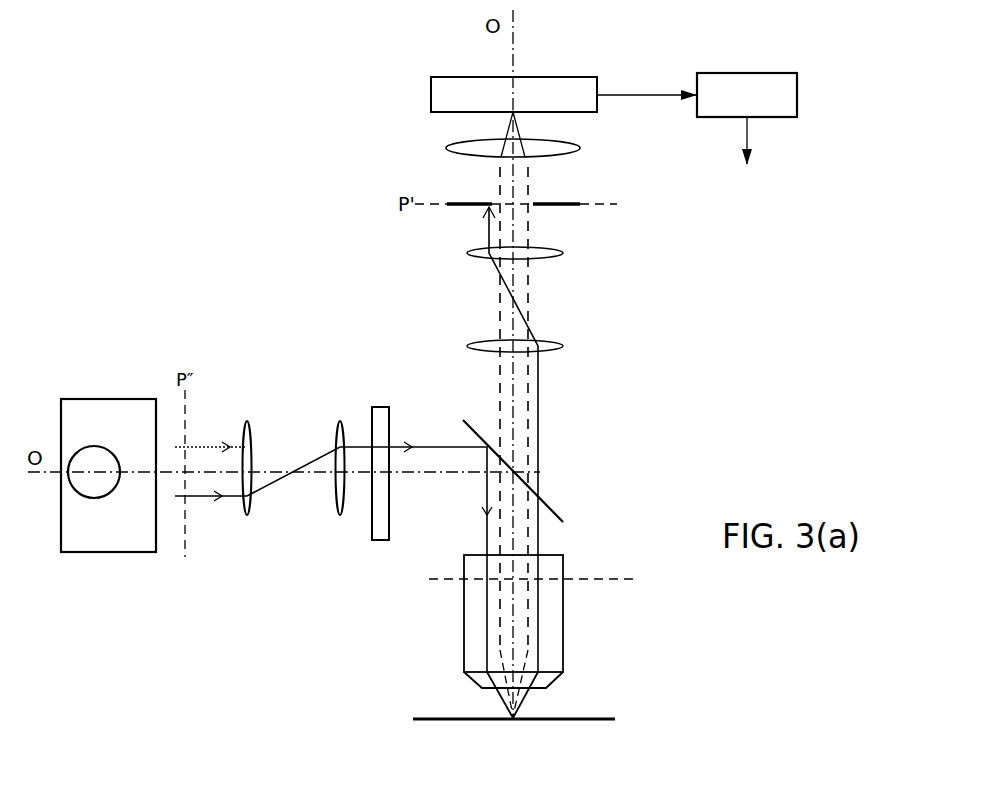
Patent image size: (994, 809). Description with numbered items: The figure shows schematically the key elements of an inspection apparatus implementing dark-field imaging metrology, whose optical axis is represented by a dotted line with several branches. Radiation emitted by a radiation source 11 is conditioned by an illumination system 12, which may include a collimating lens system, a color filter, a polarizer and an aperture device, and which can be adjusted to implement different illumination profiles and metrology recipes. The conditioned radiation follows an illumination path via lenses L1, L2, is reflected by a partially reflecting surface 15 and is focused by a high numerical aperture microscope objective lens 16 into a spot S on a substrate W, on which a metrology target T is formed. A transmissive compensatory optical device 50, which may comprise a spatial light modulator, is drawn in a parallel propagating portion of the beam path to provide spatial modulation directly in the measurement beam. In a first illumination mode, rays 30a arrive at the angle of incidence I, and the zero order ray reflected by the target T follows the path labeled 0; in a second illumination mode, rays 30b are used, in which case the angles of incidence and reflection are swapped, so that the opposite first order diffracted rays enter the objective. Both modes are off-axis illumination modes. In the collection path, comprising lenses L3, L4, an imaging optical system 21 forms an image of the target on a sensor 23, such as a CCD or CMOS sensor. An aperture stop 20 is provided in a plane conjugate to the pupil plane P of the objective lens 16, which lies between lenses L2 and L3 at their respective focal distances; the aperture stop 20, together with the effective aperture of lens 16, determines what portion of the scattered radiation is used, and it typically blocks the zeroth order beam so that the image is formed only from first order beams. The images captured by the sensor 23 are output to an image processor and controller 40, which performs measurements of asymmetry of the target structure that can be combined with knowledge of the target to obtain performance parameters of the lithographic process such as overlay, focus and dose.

The radiation source 11 is at (94, 472).
The illumination system 12 is at (108, 457).
The partially reflecting surface 15 is at (553, 502).
The microscope objective lens 16 is at (565, 630).
The aperture stop 20 is at (568, 206).
The imaging optical system 21 is at (570, 155).
The sensor 23 is at (588, 77).
The rays of first illumination mode 30a is at (452, 443).
The rays of second illumination mode 30b is at (203, 447).
The image processor and controller 40 is at (700, 149).
The compensatory optical device 50 is at (378, 541).
The zero order ray path 0 is at (540, 600).
The angle of incidence I is at (485, 638).
The spot S is at (503, 698).
The substrate W is at (422, 723).
The target T is at (542, 709).
The pupil plane P is at (542, 579).
The lens L1 is at (246, 482).
The lens L2 is at (339, 482).
The lens L3 is at (530, 349).
The lens L4 is at (530, 255).